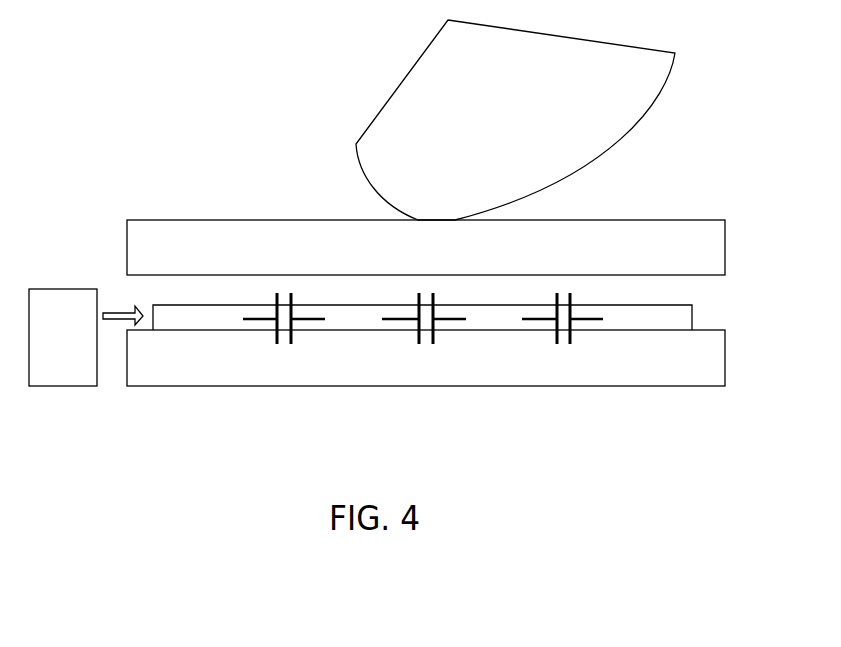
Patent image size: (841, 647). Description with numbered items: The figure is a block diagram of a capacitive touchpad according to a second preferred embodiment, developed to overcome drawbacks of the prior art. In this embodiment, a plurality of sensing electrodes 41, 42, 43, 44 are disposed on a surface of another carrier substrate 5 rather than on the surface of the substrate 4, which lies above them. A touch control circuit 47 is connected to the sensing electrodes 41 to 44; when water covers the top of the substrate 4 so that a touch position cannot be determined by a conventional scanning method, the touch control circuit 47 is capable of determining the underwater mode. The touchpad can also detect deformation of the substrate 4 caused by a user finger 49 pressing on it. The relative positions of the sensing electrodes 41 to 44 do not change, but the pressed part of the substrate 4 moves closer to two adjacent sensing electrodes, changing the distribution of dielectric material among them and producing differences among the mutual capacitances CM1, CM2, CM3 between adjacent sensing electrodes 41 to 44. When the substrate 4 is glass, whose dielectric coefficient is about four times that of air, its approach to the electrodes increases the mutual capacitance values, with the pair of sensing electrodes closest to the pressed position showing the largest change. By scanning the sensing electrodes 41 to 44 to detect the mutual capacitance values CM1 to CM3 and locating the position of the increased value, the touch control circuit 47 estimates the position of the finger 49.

The substrate 4 is at (222, 238).
The carrier substrate 5 is at (156, 372).
The sensing electrode 41 is at (203, 322).
The sensing electrode 42 is at (352, 322).
The sensing electrode 43 is at (490, 322).
The sensing electrode 44 is at (635, 322).
The touch control circuit 47 is at (68, 373).
The user finger 49 is at (628, 108).
The mutual capacitance CM1 is at (275, 343).
The mutual capacitance CM2 is at (416, 338).
The mutual capacitance CM3 is at (553, 338).